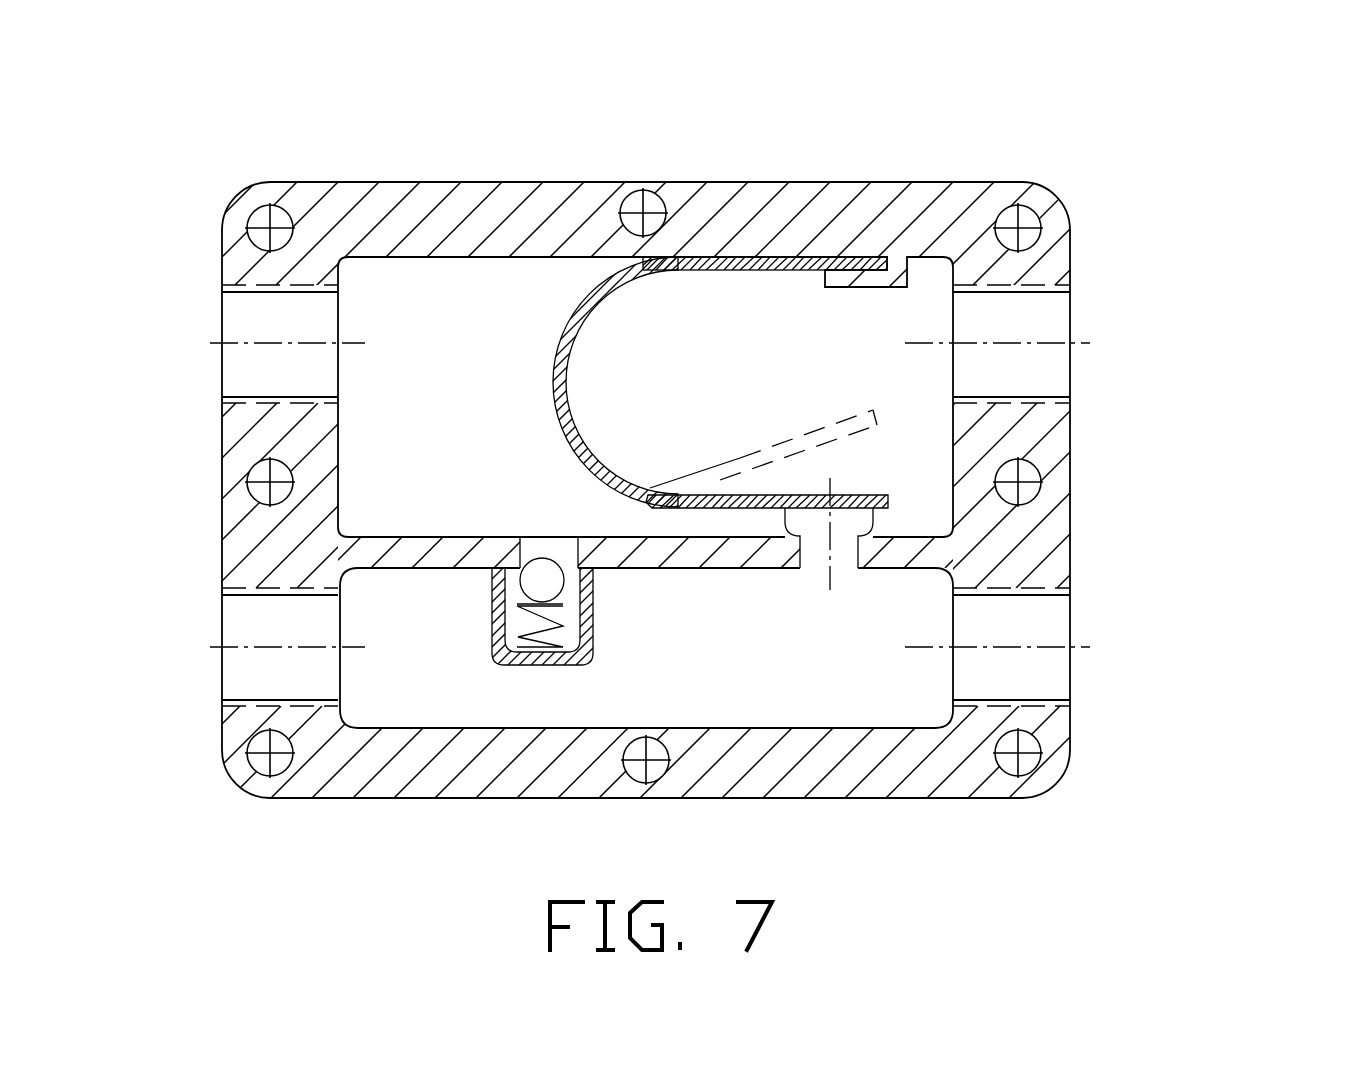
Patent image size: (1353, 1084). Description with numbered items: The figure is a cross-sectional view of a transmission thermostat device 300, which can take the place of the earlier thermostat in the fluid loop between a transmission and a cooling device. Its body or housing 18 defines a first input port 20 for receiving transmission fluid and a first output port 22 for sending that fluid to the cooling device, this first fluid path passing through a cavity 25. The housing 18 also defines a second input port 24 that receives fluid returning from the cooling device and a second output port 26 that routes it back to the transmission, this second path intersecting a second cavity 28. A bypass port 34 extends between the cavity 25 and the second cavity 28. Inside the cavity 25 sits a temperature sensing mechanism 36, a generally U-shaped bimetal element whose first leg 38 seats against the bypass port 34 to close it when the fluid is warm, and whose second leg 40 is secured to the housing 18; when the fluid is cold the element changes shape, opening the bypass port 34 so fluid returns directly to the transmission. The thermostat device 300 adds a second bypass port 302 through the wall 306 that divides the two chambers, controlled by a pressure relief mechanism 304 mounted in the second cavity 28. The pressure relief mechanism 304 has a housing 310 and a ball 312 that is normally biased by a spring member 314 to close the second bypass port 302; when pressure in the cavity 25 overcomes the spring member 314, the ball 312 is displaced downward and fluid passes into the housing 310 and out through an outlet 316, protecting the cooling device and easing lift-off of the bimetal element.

The thermostat device 300 is at (1155, 187).
The housing 18 is at (1080, 460).
The first input port 20 is at (1045, 390).
The first output port 22 is at (272, 395).
The second input port 24 is at (277, 697).
The second output port 26 is at (1045, 690).
The cavity 25 is at (488, 367).
The second cavity 28 is at (900, 708).
The bypass port 34 is at (833, 577).
The temperature sensing mechanism 36 is at (585, 382).
The first leg 38 is at (740, 458).
The second leg 40 is at (793, 260).
The second bypass port 302 is at (562, 555).
The pressure relief mechanism 304 is at (480, 652).
The wall 306 is at (422, 547).
The housing 310 is at (577, 663).
The ball 312 is at (563, 585).
The spring member 314 is at (522, 618).
The outlet 316 is at (588, 625).